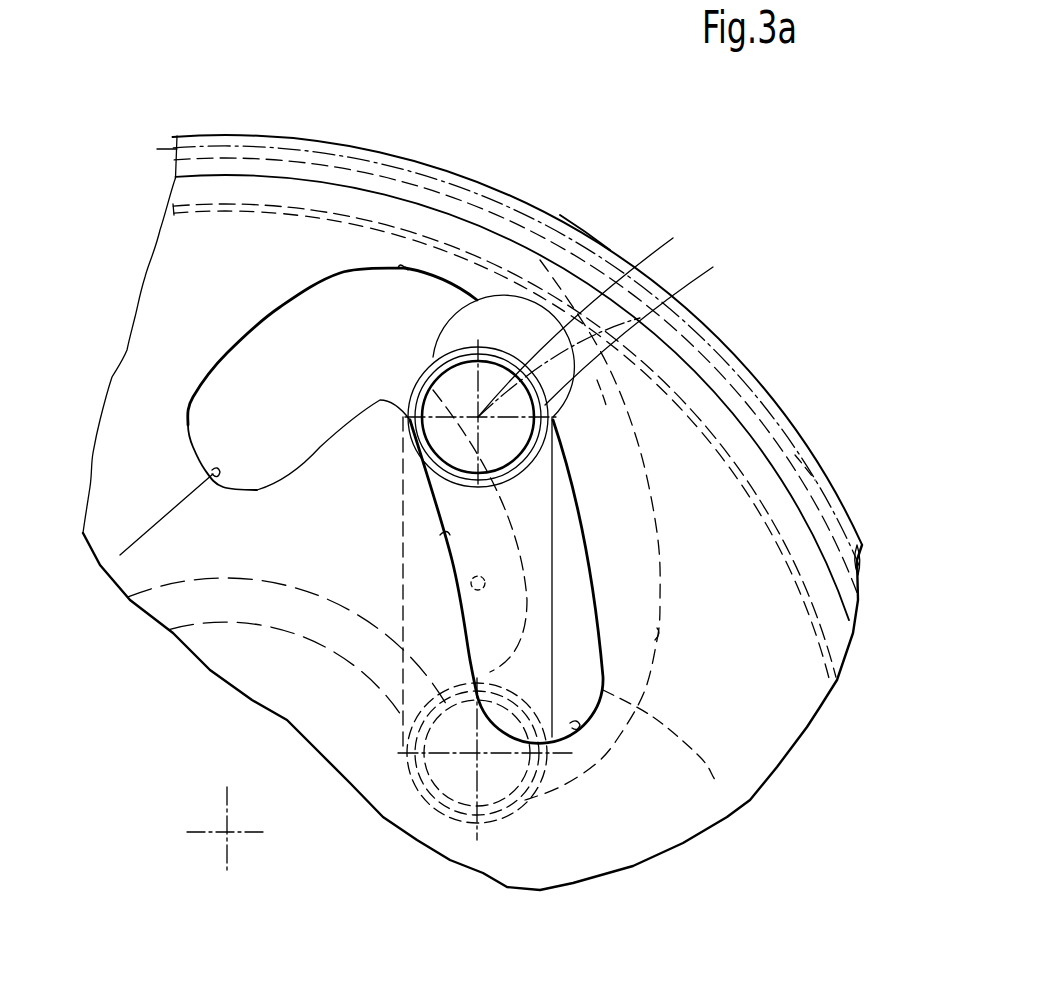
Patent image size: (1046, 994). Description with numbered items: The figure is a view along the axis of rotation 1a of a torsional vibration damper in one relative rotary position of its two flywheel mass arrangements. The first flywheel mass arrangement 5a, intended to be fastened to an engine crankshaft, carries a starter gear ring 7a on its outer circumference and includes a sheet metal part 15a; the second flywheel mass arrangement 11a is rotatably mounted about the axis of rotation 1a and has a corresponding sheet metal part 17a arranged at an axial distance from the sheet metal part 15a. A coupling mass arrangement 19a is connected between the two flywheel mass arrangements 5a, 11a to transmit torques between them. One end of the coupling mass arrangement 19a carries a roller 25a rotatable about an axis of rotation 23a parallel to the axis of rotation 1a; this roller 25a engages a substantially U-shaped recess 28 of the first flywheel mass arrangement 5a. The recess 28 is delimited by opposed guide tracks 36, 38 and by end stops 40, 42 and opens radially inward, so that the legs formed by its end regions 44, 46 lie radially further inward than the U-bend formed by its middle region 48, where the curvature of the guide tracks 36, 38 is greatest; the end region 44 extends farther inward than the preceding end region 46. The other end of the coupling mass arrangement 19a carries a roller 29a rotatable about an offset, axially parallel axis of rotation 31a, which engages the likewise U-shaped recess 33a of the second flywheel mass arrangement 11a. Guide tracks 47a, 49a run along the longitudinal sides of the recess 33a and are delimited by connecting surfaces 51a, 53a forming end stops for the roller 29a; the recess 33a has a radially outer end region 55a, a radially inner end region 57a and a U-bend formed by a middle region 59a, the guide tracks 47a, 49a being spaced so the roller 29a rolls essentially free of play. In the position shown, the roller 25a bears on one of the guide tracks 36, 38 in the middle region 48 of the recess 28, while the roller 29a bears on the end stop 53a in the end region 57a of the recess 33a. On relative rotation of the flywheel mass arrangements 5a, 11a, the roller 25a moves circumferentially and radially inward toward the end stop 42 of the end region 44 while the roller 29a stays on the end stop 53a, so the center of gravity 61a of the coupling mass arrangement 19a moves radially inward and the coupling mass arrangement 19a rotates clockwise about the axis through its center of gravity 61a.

The axis of rotation 1a is at (230, 835).
The first flywheel mass arrangement 5a is at (160, 230).
The starter gear ring 7a is at (333, 143).
The second flywheel mass arrangement 11a is at (800, 747).
The sheet metal part 15a is at (150, 470).
The sheet metal part 17a is at (706, 487).
The coupling mass arrangement 19a is at (553, 480).
The axis of rotation 23a is at (648, 327).
The roller 25a is at (593, 318).
The U-shaped recess 28 is at (307, 413).
The roller 29a is at (530, 797).
The axis of rotation 31a is at (480, 787).
The U-shaped recess 33a is at (653, 587).
The guide track 36 is at (446, 533).
The guide track 38 is at (403, 266).
The end stop 40 is at (120, 555).
The end stop 42 is at (575, 730).
The end region 44 is at (467, 640).
The end region 46 is at (227, 347).
The guide track 47a is at (717, 783).
The middle region 48 is at (455, 280).
The guide track 49a is at (657, 638).
The connecting surface 51a is at (583, 233).
The end stop 53a is at (457, 790).
The radially outer end region 55a is at (608, 400).
The radially inner end region 57a is at (620, 733).
The middle region 59a is at (807, 470).
The center of gravity 61a is at (470, 585).